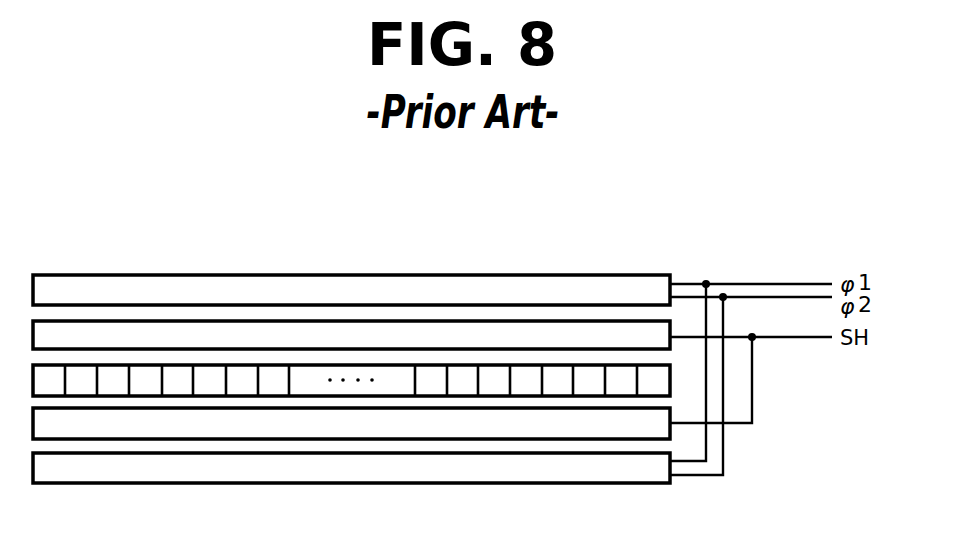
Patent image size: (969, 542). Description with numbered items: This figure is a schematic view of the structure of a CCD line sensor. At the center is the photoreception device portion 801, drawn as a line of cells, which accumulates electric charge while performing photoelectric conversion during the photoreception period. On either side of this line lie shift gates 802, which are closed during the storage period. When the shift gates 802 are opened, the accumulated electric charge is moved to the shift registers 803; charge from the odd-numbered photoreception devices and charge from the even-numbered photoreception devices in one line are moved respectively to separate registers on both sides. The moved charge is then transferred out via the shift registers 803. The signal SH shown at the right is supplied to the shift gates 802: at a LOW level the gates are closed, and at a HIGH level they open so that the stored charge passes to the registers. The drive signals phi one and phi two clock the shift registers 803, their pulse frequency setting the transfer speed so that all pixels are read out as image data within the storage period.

The photoreception device portion 801 is at (385, 372).
The shift gates 802 is at (80, 420).
The shift registers 803 is at (167, 462).